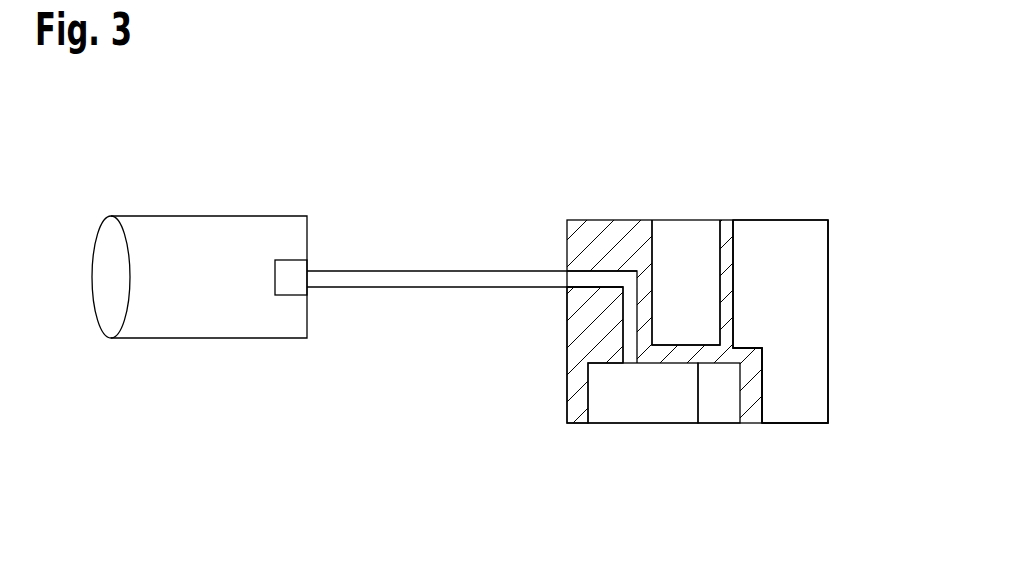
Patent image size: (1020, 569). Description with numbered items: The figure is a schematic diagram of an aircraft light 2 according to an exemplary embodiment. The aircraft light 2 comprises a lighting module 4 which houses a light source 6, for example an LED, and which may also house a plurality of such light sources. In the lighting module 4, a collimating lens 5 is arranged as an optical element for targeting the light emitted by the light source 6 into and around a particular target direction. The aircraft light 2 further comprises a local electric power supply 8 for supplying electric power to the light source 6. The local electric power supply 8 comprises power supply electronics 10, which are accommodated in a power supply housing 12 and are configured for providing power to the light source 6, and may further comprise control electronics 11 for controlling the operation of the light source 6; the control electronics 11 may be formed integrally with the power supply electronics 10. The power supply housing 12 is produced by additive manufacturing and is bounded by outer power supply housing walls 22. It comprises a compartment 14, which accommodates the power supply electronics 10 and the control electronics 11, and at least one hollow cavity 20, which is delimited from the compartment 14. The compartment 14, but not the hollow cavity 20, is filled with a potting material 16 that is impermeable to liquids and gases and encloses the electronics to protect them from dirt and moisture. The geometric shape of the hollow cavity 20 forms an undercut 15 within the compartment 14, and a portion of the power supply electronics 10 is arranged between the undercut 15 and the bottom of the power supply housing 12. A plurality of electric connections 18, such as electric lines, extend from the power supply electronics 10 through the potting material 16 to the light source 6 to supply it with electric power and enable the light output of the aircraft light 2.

The aircraft light 2 is at (642, 268).
The lighting module 4 is at (170, 330).
The collimating lens 5 is at (107, 277).
The light source 6 is at (290, 281).
The local electric power supply 8 is at (642, 286).
The power supply electronics 10 is at (644, 403).
The control electronics 11 is at (725, 403).
The power supply housing 12 is at (847, 266).
The compartment 14 is at (606, 220).
The undercut 15 is at (752, 340).
The potting material 16 is at (588, 326).
The electric connections 18 is at (425, 262).
The hollow cavity 20 is at (689, 251).
The outer power supply housing walls 22 is at (567, 248).